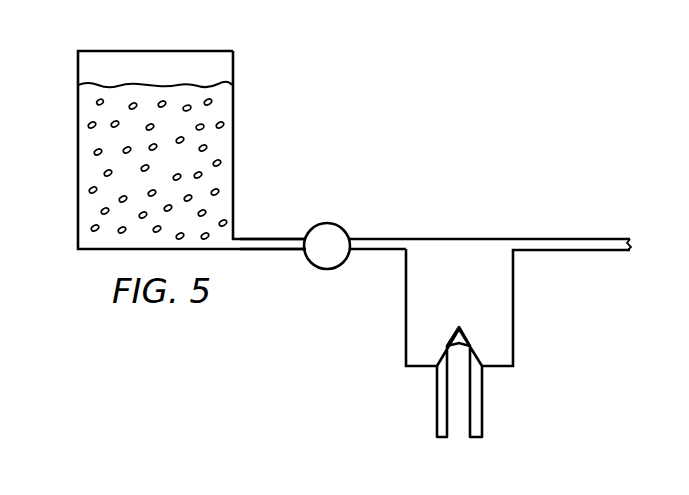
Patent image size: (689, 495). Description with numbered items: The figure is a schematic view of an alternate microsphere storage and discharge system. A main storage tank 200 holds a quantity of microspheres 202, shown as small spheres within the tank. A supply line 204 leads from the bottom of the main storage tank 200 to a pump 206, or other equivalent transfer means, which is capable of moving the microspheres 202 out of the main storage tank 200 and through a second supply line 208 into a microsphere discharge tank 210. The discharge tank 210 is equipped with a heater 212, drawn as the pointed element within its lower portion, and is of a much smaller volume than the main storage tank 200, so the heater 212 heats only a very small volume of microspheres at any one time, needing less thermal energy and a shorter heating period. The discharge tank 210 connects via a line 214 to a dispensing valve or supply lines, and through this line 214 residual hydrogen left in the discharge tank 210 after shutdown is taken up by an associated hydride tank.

The main storage tank 200 is at (78, 192).
The microspheres 202 is at (85, 136).
The supply line 204 is at (248, 240).
The pump 206 is at (330, 223).
The second supply line 208 is at (403, 240).
The microsphere discharge tank 210 is at (513, 287).
The heater 212 is at (482, 395).
The line 214 is at (549, 239).